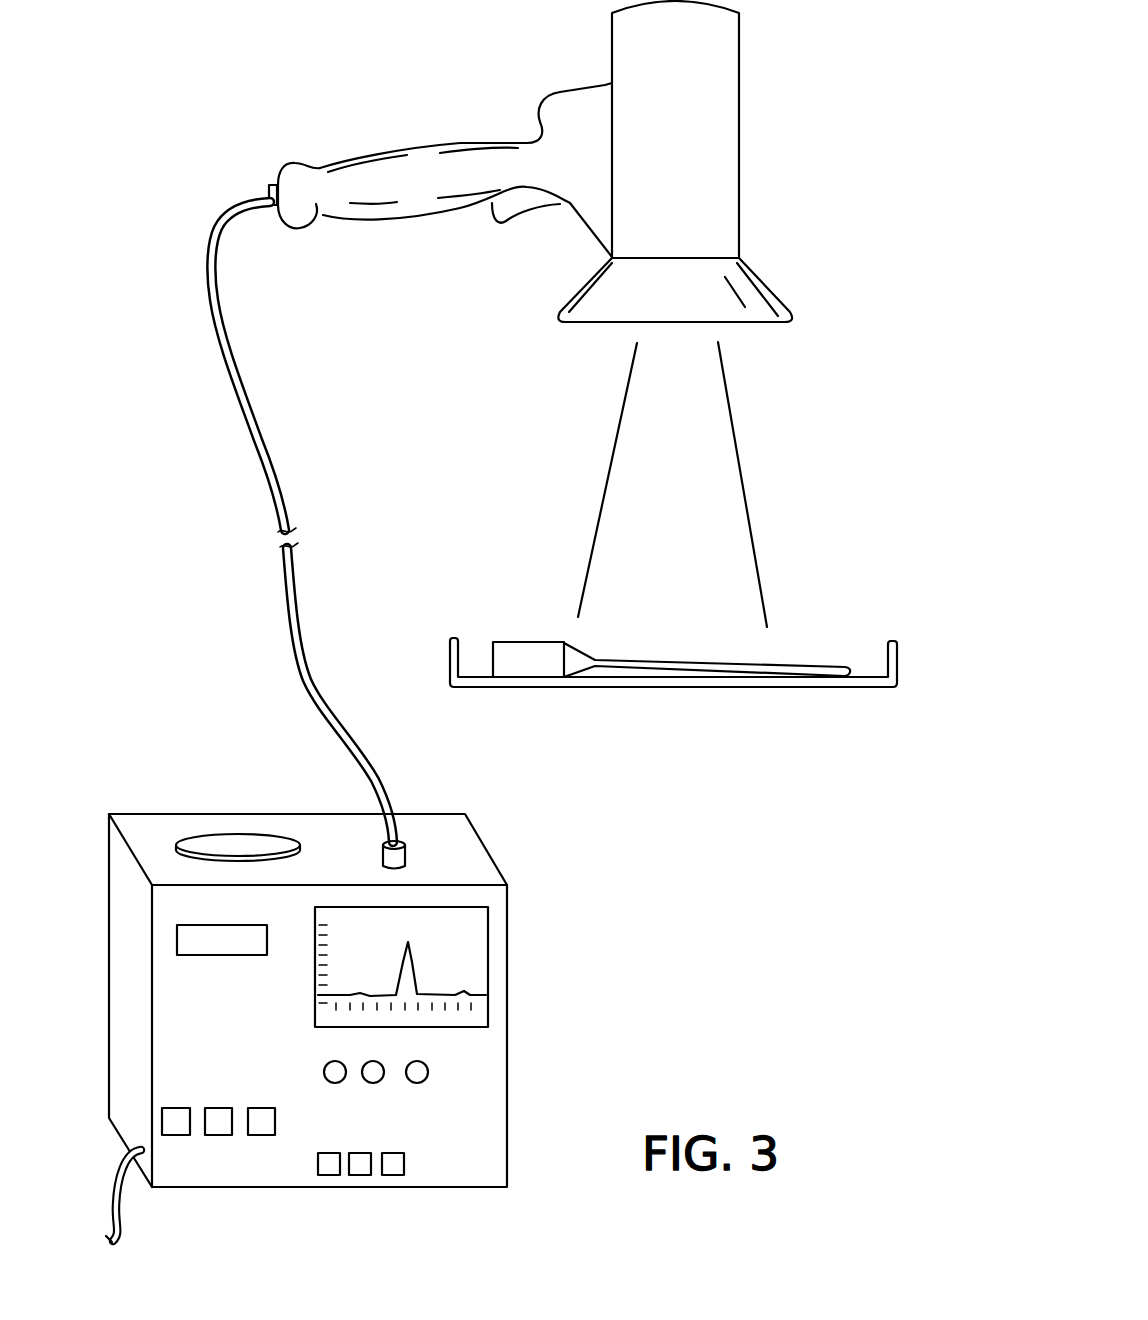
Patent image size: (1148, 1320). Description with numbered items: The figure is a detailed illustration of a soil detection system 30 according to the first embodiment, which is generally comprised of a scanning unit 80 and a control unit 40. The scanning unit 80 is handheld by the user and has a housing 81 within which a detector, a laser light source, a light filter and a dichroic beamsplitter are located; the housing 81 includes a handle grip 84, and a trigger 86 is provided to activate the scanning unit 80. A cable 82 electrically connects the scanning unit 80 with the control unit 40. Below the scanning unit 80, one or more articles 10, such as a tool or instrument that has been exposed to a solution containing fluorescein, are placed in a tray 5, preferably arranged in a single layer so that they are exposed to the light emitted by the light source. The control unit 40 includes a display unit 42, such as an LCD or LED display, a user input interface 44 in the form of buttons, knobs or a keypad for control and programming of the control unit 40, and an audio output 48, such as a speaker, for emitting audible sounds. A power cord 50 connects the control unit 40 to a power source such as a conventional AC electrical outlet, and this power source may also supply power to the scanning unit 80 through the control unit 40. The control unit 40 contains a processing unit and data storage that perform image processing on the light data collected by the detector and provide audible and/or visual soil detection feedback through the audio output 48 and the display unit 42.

The soil detection system 30 is at (277, 110).
The scanning unit 80 is at (740, 166).
The housing 81 is at (728, 72).
The handle grip 84 is at (417, 157).
The trigger 86 is at (522, 205).
The cable 82 is at (273, 455).
The tray 5 is at (865, 688).
The article 10 is at (778, 668).
The control unit 40 is at (167, 813).
The audio output 48 is at (240, 843).
The display unit 42 is at (490, 960).
The user input interface 44 is at (273, 1122).
The power cord 50 is at (124, 1229).